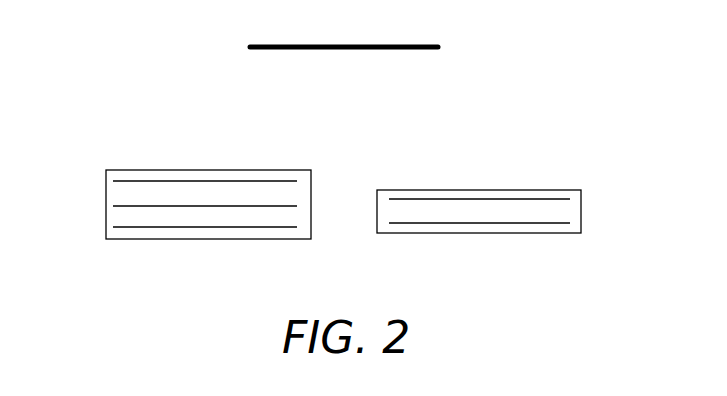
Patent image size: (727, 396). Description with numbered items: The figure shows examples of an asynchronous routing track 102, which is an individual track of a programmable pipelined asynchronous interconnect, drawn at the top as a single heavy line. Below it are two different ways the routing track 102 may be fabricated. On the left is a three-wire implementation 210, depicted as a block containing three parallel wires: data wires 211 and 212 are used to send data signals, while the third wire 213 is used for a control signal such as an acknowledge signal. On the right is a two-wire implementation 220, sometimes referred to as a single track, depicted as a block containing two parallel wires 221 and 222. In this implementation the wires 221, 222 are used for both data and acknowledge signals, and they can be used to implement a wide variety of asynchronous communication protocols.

The asynchronous routing track 102 is at (400, 46).
The three-wire implementation 210 is at (275, 168).
The data wire 211 is at (204, 182).
The data wire 212 is at (118, 205).
The wire 213 is at (205, 227).
The two-wire implementation 220 is at (545, 189).
The wire 221 is at (478, 198).
The wire 222 is at (478, 223).